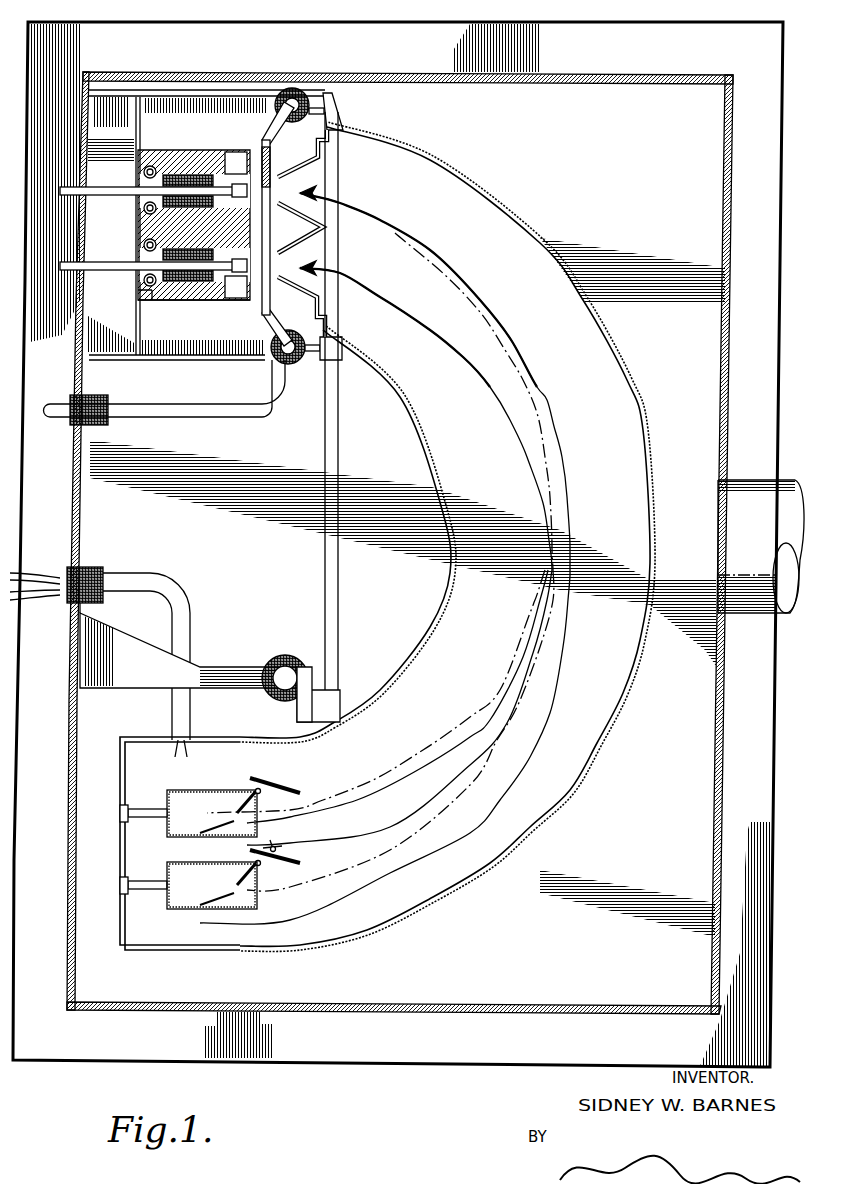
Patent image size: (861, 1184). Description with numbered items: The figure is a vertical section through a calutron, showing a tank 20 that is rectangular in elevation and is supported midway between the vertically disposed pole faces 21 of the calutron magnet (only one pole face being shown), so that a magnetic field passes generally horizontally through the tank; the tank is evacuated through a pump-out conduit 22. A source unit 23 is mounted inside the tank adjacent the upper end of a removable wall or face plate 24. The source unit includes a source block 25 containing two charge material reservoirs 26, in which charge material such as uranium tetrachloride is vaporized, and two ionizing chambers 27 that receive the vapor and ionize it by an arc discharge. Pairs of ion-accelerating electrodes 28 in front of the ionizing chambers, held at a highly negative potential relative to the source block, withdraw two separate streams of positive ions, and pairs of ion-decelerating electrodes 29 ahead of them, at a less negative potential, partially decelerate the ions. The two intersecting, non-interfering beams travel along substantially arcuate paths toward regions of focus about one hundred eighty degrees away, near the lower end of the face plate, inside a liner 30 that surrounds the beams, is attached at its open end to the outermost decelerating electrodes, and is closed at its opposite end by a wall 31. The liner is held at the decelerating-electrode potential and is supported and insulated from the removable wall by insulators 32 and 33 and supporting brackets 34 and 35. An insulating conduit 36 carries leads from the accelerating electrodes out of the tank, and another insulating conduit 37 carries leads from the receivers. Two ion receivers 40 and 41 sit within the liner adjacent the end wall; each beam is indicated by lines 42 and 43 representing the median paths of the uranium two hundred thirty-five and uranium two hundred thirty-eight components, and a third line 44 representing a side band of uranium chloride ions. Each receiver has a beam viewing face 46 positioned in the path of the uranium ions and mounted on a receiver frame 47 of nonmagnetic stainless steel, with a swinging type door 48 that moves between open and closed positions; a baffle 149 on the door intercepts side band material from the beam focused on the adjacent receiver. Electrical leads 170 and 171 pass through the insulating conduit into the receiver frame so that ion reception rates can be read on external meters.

The tank 20 is at (733, 240).
The pole faces 21 is at (618, 60).
The pump-out conduit 22 is at (748, 480).
The source unit 23 is at (195, 156).
The removable wall or face plate 24 is at (70, 832).
The source block 25 is at (186, 298).
The charge material reservoirs 26 is at (175, 205).
The ionizing chambers 27 is at (229, 162).
The ion-accelerating electrodes 28 is at (269, 178).
The ion-decelerating electrodes 29 is at (296, 190).
The liner 30 is at (503, 207).
The wall 31 is at (120, 920).
The insulator 32 is at (285, 655).
The insulator 33 is at (290, 90).
The supporting bracket 34 is at (120, 688).
The supporting bracket 35 is at (166, 358).
The insulating conduit 36 is at (202, 418).
The insulating conduit 37 is at (165, 573).
The ion receiver 40 is at (224, 789).
The ion receiver 41 is at (178, 905).
The median path line of U-235 component 42 is at (545, 422).
The median path line of U-238 component 43 is at (553, 458).
The median path line of side band 44 is at (570, 500).
The beam viewing face 46 is at (254, 801).
The receiver frame 47 is at (176, 790).
The swinging type door 48 is at (276, 786).
The baffle 149 is at (276, 844).
The electrical lead 170 is at (36, 578).
The electrical lead 171 is at (36, 597).